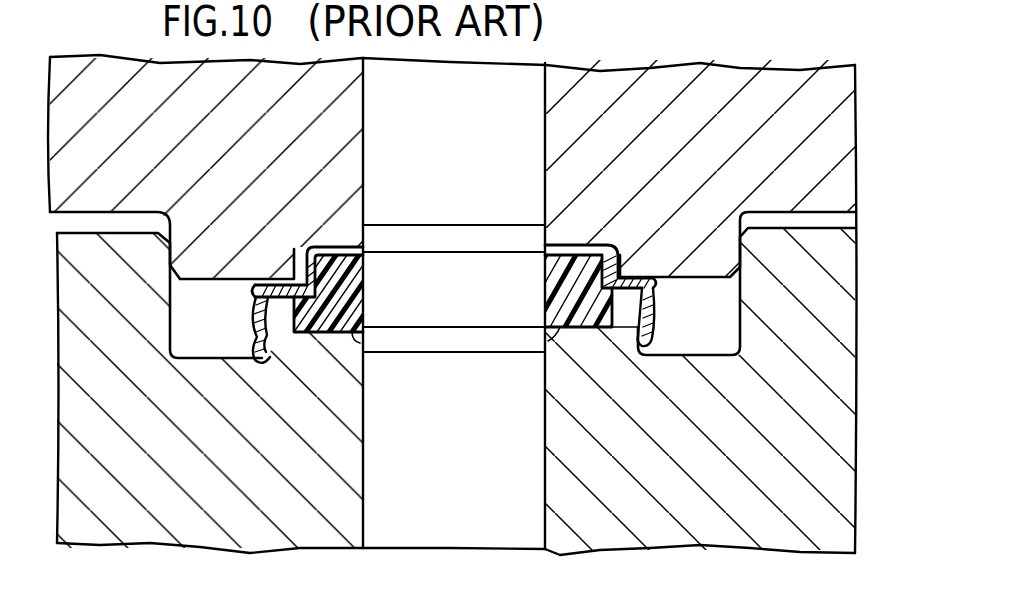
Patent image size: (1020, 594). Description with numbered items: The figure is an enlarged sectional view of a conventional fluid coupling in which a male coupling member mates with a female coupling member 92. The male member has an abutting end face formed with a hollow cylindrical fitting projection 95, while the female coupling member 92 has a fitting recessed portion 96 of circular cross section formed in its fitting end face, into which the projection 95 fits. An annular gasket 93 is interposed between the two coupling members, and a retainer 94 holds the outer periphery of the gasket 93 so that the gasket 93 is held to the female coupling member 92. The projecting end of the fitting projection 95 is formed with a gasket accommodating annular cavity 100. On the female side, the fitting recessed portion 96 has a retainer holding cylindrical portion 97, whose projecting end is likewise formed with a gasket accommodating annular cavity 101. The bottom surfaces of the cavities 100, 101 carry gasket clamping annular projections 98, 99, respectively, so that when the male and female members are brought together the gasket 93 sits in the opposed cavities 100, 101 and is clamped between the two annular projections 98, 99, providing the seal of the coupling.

The female coupling member 92 is at (710, 533).
The annular gasket 93 is at (363, 300).
The retainer 94 is at (262, 355).
The hollow cylindrical fitting projection 95 is at (198, 247).
The fitting recessed portion 96 is at (172, 297).
The retainer holding cylindrical portion 97 is at (272, 300).
The gasket clamping annular projection 98 is at (353, 243).
The gasket clamping annular projection 99 is at (354, 334).
The gasket accommodating annular cavity 100 is at (588, 247).
The gasket accommodating annular cavity 101 is at (565, 332).